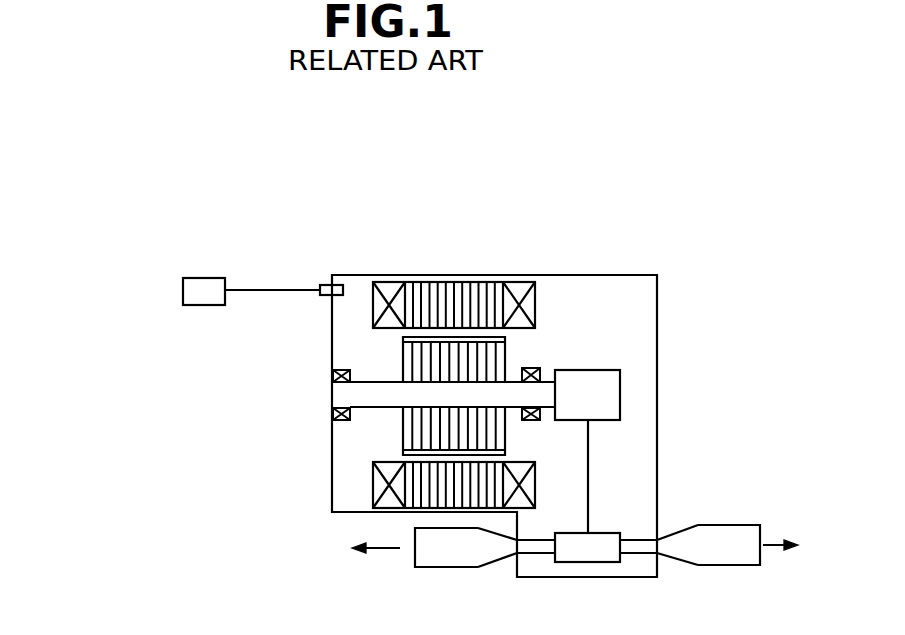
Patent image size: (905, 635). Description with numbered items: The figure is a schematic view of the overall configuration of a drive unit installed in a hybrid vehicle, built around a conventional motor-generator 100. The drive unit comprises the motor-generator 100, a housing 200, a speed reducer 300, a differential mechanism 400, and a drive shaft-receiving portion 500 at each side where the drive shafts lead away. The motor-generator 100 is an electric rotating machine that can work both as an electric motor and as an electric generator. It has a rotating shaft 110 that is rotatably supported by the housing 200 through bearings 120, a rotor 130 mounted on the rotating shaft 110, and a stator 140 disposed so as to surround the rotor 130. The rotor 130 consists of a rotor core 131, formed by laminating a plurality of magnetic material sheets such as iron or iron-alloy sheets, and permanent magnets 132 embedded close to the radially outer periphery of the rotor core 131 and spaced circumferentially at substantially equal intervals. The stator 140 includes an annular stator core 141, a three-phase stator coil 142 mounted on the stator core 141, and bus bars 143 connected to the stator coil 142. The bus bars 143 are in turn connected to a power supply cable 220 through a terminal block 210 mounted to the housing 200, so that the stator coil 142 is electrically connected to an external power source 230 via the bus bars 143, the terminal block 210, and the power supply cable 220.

The motor-generator 100 is at (87, 142).
The rotating shaft 110 is at (348, 393).
The bearings 120 is at (335, 376).
The rotor 130 is at (297, 401).
The rotor core 131 is at (420, 357).
The permanent magnets 132 is at (403, 343).
The stator 140 is at (311, 346).
The stator core 141 is at (437, 290).
The stator coil 142 is at (518, 288).
The bus bars 143 is at (357, 275).
The housing 200 is at (657, 298).
The terminal block 210 is at (328, 285).
The power supply cable 220 is at (245, 287).
The external power source 230 is at (203, 283).
The speed reducer 300 is at (620, 393).
The differential mechanism 400 is at (590, 557).
The drive shaft-receiving portion 500 is at (453, 560).